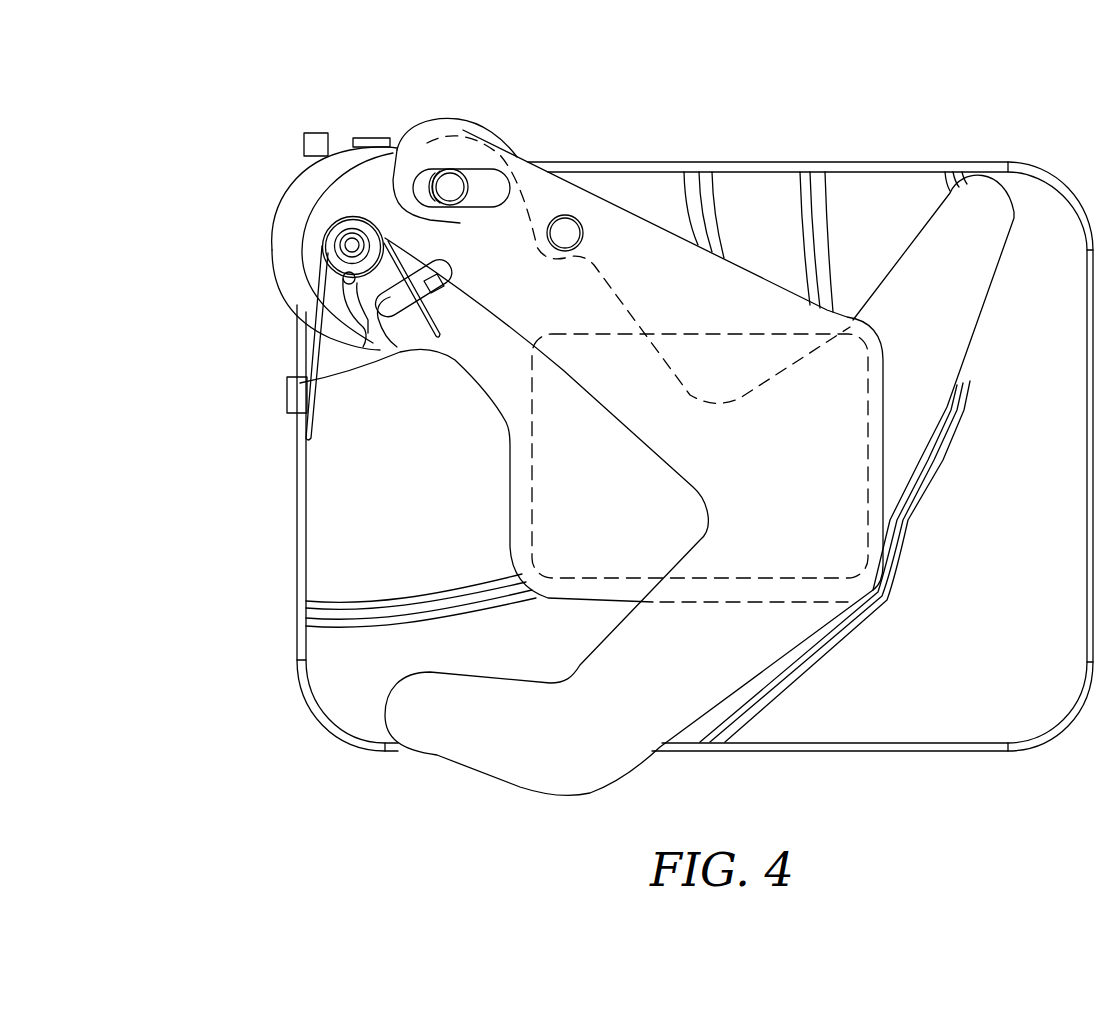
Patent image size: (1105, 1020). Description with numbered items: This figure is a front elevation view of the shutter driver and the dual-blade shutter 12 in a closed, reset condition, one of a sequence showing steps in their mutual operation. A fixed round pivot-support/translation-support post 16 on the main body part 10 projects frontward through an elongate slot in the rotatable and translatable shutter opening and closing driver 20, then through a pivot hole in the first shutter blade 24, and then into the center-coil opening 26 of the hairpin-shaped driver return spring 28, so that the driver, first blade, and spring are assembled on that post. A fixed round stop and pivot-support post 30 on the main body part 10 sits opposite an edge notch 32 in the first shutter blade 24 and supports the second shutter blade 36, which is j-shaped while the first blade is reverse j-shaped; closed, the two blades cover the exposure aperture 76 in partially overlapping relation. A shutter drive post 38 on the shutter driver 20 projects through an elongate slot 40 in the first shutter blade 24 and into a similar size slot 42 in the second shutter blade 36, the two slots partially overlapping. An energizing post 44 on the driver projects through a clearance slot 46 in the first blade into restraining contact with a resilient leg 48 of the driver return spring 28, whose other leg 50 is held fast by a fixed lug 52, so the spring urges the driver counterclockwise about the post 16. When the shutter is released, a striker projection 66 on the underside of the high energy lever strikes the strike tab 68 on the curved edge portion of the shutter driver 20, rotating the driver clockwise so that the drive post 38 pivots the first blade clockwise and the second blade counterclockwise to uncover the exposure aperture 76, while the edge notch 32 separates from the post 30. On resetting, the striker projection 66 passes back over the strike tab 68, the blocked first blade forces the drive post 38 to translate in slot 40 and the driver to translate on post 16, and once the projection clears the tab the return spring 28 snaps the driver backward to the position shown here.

The main body part 10 is at (313, 703).
The dual-blade shutter 12 is at (930, 461).
The pivot-support/translation-support post 16 is at (347, 250).
The shutter opening and closing driver 20 is at (293, 284).
The first shutter blade 24 is at (967, 294).
The center-coil opening 26 is at (346, 321).
The driver return spring 28 is at (328, 228).
The stop and pivot-support post 30 is at (567, 236).
The edge notch 32 is at (630, 300).
The second shutter blade 36 is at (440, 752).
The shutter drive post 38 is at (452, 185).
The elongate slot 40 is at (413, 205).
The slot 42 is at (508, 188).
The energizing post 44 is at (452, 278).
The clearance slot 46 is at (393, 358).
The resilient leg 48 is at (438, 338).
The leg 50 is at (311, 439).
The fixed lug 52 is at (287, 392).
The striker projection 66 is at (304, 140).
The strike tab 68 is at (367, 138).
The exposure aperture 76 is at (548, 580).